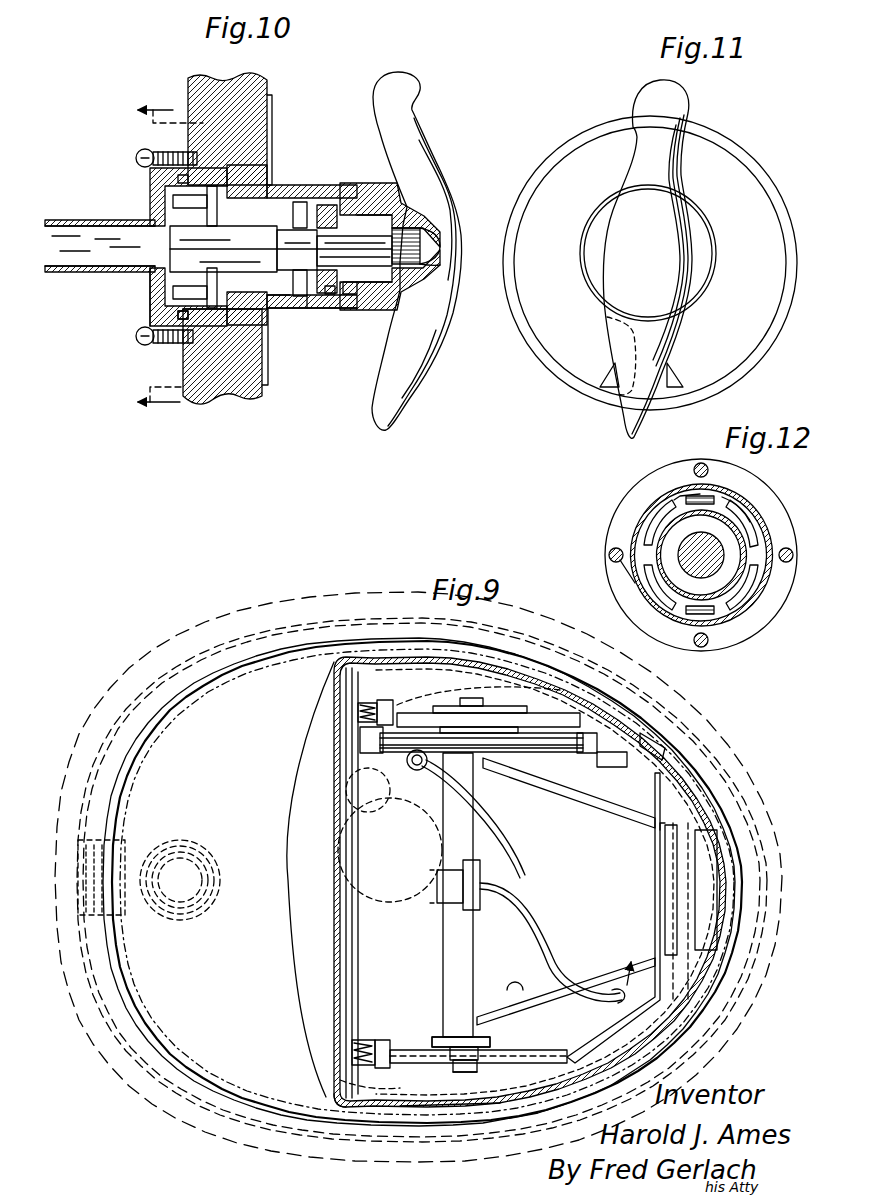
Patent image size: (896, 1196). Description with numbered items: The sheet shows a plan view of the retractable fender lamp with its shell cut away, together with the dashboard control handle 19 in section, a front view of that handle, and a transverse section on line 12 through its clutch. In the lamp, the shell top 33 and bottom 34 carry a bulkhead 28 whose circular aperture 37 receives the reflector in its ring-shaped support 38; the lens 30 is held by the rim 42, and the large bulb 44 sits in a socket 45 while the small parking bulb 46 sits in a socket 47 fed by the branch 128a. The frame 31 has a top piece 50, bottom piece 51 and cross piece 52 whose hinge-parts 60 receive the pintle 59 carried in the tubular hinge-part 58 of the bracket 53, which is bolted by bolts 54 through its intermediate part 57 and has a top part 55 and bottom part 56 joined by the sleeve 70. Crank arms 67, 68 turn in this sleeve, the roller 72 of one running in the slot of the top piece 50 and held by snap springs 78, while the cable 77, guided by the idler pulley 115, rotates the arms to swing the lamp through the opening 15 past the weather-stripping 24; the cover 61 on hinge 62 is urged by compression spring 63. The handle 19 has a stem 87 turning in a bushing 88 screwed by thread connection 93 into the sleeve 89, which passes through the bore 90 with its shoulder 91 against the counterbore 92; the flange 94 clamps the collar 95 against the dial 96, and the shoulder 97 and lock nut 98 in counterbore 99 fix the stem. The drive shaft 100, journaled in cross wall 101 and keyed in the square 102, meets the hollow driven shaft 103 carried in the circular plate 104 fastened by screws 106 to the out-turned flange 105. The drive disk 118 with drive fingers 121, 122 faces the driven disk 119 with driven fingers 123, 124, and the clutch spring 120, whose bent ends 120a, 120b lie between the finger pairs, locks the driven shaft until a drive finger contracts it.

In FIG. 10, the section line 12— 12 is at (170, 257).
In FIG. 9, the opening 15 is at (128, 768).
In FIG. 10, the control handle 19 is at (446, 170).
In FIG. 11, the control handle 19 is at (690, 188).
In FIG. 9, the piece of weather-stripping 24 is at (156, 735).
In FIG. 9, the bulkhead 28 is at (378, 1068).
In FIG. 9, the lens 30 is at (288, 935).
In FIG. 9, the frame 31 is at (548, 1060).
In FIG. 9, the top of the shell 33 is at (520, 700).
In FIG. 9, the bottom of the shell 34 is at (465, 1108).
In FIG. 9, the circular aperture 37 is at (378, 1043).
In FIG. 9, the ring-shaped support 38 is at (345, 1020).
In FIG. 9, the rim 42 is at (336, 1100).
In FIG. 9, the large electric bulb 44 is at (392, 905).
In FIG. 9, the socket 45 is at (470, 910).
In FIG. 9, the small electric bulb 46 is at (385, 812).
In FIG. 9, the socket 47 is at (415, 772).
In FIG. 9, the top piece 50 is at (560, 705).
In FIG. 9, the bottom piece 51 is at (488, 1047).
In FIG. 9, the cross piece 52 is at (662, 892).
In FIG. 9, the bracket 53 is at (637, 978).
In FIG. 9, the bolts 54 is at (521, 979).
In FIG. 9, the top part 55 is at (600, 800).
In FIG. 9, the bottom part 56 is at (600, 976).
In FIG. 9, the intermediate or connecting part 57 is at (613, 918).
In FIG. 9, the tubular hinge-part 58 is at (680, 926).
In FIG. 9, the pintle 59 is at (735, 965).
In FIG. 9, the hinge-parts 60 is at (700, 975).
In FIG. 9, the sheet metal cover 61 is at (380, 847).
In FIG. 9, the hinge 62 is at (85, 930).
In FIG. 9, the compression spring 63 is at (184, 920).
In FIG. 9, the crank arm 67 is at (473, 696).
In FIG. 9, the crank arm 68 is at (480, 1048).
In FIG. 9, the sleeve 70 is at (455, 964).
In FIG. 9, the roller 72 is at (490, 710).
In FIG. 9, the cable 77 is at (610, 740).
In FIG. 9, the snap springs 78 is at (545, 712).
In FIG. 10, the stem 87 is at (368, 230).
In FIG. 10, the bushing 88 is at (363, 185).
In FIG. 10, the sleeve 89 is at (300, 202).
In FIG. 10, the bore 90 is at (268, 183).
In FIG. 10, the shoulder 91 is at (270, 135).
In FIG. 10, the counterbore 92 is at (268, 118).
In FIG. 10, the screw thread connection 93 is at (326, 204).
In FIG. 10, the flange 94 is at (352, 296).
In FIG. 10, the collar 95 is at (300, 310).
In FIG. 10, the dial 96 is at (262, 382).
In FIG. 11, the dial 96 is at (742, 335).
In FIG. 10, the shoulder 97 is at (393, 300).
In FIG. 10, the lock nut 98 is at (350, 292).
In FIG. 9, the lock nut 98 is at (360, 1052).
In FIG. 10, the counterbore 99 is at (330, 297).
In FIG. 9, the counterbore 99 is at (352, 1100).
In FIG. 10, the drive shaft 100 is at (410, 230).
In FIG. 12, the drive shaft 100 is at (740, 565).
In FIG. 10, the cross wall 101 is at (276, 312).
In FIG. 10, the square 102 is at (438, 262).
In FIG. 10, the driven shaft 103 is at (62, 268).
In FIG. 10, the circular plate 104 is at (152, 193).
In FIG. 10, the out-turned flange 105 is at (175, 150).
In FIG. 12, the out-turned flange 105 is at (612, 574).
In FIG. 10, the screws 106 is at (136, 158).
In FIG. 12, the screws 106 is at (612, 549).
In FIG. 9, the idler pulley 115 is at (665, 730).
In FIG. 10, the drive disk 118 is at (170, 230).
In FIG. 12, the drive disk 118 is at (650, 528).
In FIG. 10, the driven disk 119 is at (150, 303).
In FIG. 10, the clutch spring 120 is at (190, 352).
In FIG. 12, the clutch spring 120 is at (760, 518).
In FIG. 12, the piece 120a is at (722, 500).
In FIG. 12, the piece 120b is at (735, 595).
In FIG. 12, the drive finger 121 is at (735, 510).
In FIG. 12, the drive finger 122 is at (752, 585).
In FIG. 10, the driven finger 123 is at (170, 190).
In FIG. 12, the driven finger 123 is at (730, 497).
In FIG. 10, the driven finger 124 is at (136, 337).
In FIG. 12, the driven finger 124 is at (713, 615).
In FIG. 9, the branch 128a is at (510, 855).